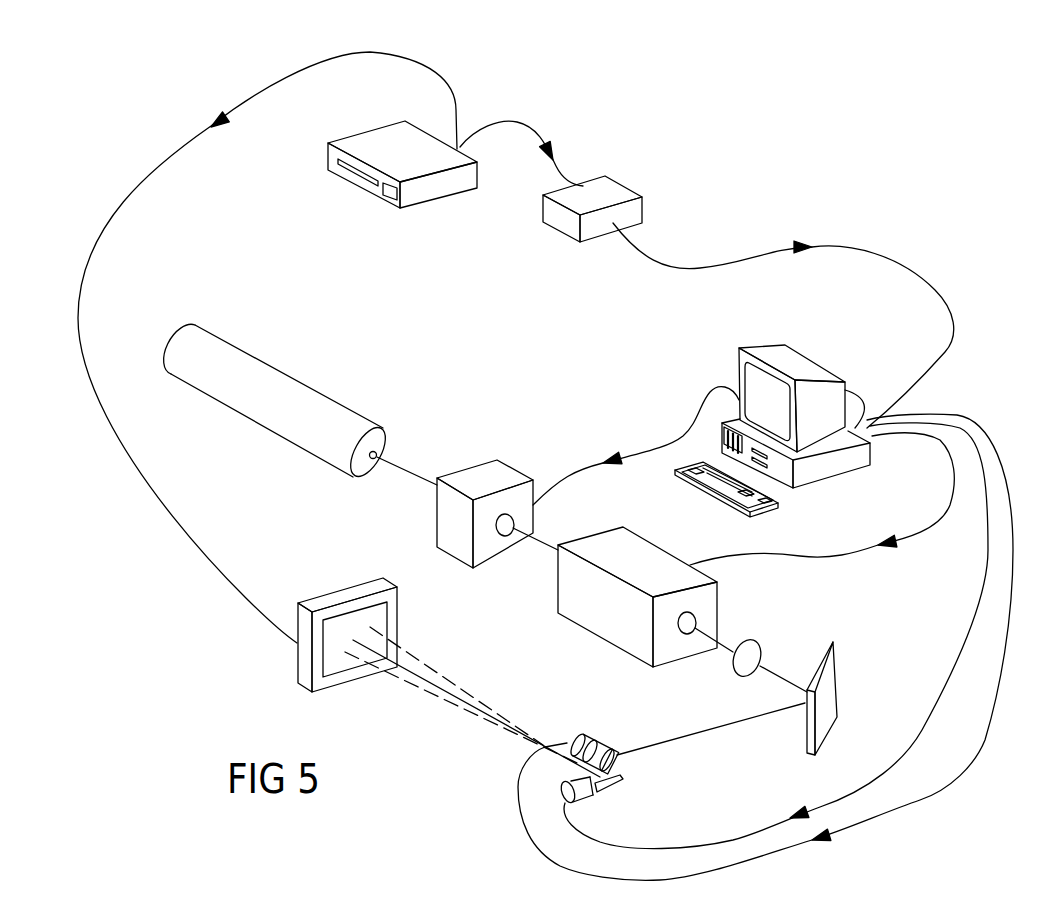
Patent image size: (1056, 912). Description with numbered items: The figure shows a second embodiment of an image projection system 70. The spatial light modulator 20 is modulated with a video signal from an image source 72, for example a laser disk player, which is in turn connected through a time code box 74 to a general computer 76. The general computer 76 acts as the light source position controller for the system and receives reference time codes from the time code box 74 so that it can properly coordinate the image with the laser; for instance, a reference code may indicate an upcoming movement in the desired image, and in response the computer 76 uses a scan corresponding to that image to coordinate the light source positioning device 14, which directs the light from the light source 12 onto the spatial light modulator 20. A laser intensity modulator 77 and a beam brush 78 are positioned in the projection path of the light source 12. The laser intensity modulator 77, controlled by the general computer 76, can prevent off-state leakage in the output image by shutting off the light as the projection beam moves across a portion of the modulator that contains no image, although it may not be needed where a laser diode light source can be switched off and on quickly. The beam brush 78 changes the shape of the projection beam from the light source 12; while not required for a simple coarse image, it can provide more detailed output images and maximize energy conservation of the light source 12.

The image projection system 70 is at (800, 192).
The image source 72 is at (407, 200).
The time code box 74 is at (640, 207).
The general computer 76 is at (739, 366).
The laser intensity modulator 77 is at (522, 476).
The beam brush 78 is at (558, 595).
The light source 12 is at (372, 475).
The spatial light modulator 20 is at (298, 668).
The light source positioning device 14 is at (587, 733).